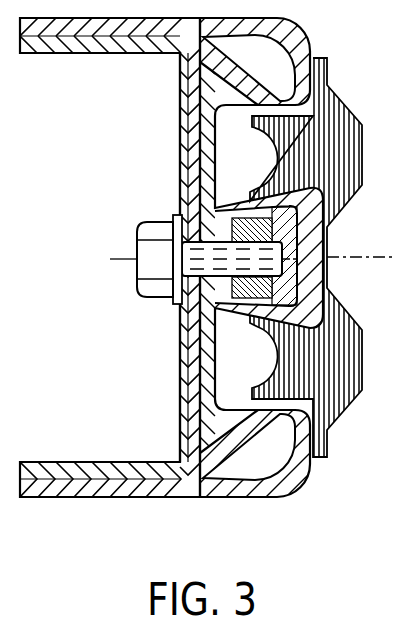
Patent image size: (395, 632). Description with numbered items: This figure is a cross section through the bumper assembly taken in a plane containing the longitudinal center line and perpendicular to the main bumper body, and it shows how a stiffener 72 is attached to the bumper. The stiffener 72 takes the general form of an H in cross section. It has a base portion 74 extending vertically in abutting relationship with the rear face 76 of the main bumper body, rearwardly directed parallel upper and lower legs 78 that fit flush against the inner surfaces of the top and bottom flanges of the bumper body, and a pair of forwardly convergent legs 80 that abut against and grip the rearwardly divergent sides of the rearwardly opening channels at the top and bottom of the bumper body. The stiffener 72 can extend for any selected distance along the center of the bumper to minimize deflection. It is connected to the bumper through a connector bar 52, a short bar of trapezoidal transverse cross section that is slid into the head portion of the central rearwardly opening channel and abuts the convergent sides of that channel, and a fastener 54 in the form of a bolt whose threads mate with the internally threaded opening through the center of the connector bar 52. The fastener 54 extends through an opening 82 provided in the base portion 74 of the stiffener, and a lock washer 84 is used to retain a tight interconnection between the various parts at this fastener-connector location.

The connector bar 52 is at (272, 292).
The fastener 54 is at (137, 275).
The stiffener 72 is at (180, 68).
The base portion 74 is at (192, 150).
The rear face 76 is at (205, 160).
The upper and lower legs 78 is at (72, 50).
The forwardly convergent legs 80 is at (233, 68).
The opening 82 is at (187, 313).
The lock washer 84 is at (136, 245).